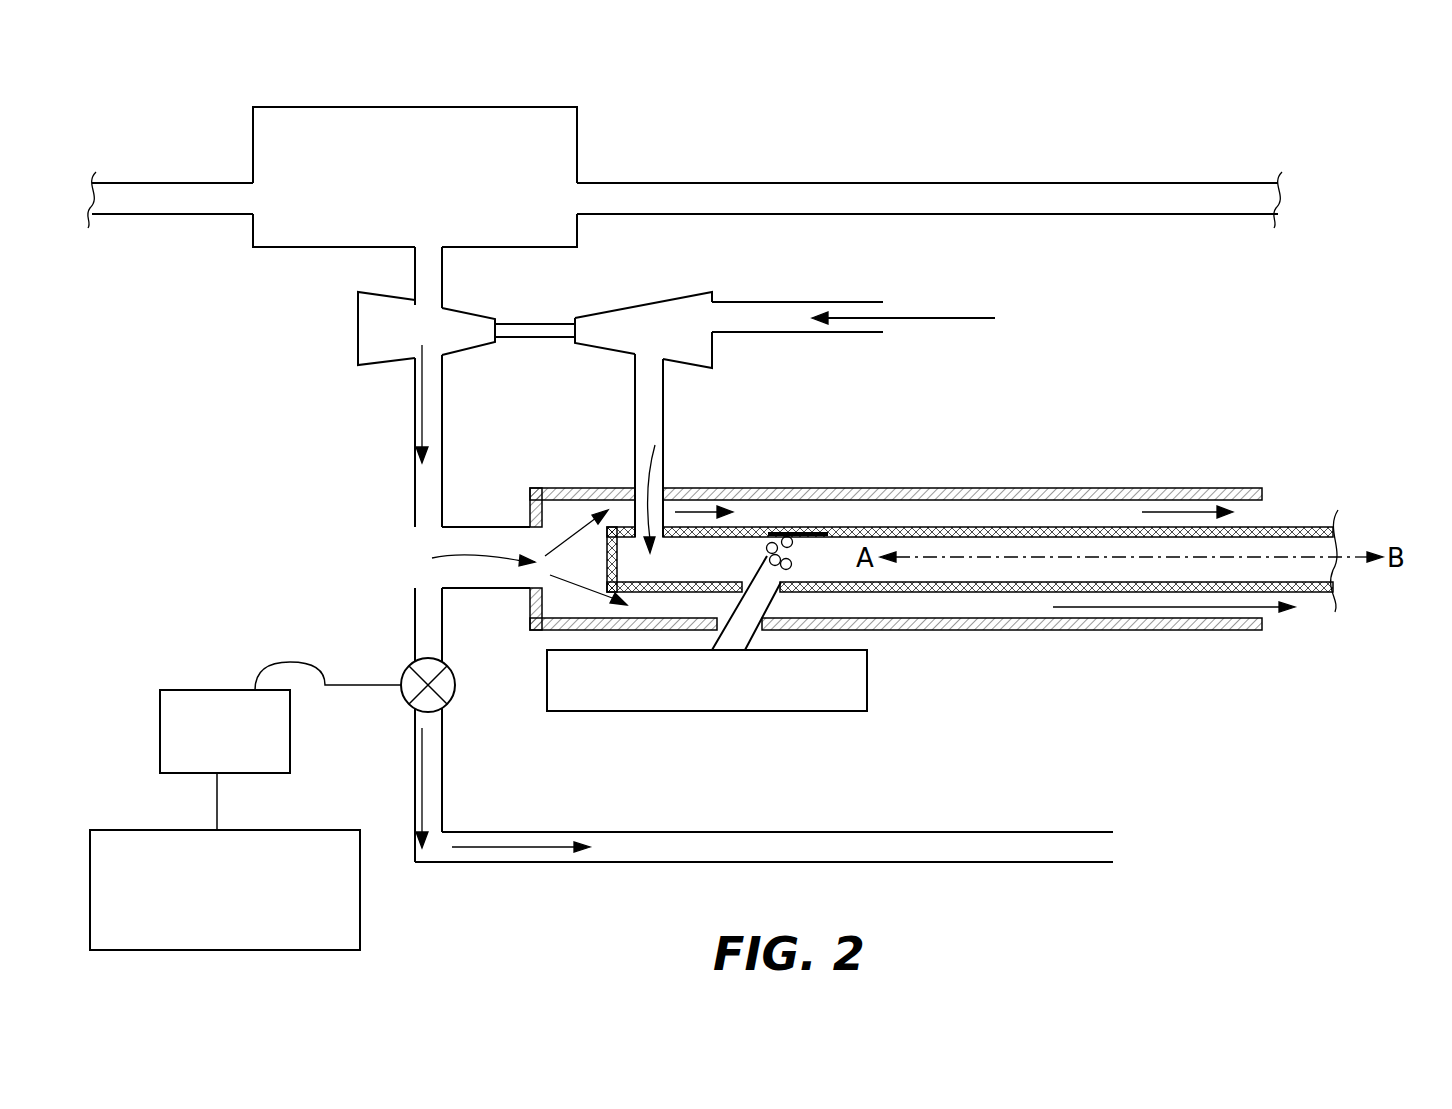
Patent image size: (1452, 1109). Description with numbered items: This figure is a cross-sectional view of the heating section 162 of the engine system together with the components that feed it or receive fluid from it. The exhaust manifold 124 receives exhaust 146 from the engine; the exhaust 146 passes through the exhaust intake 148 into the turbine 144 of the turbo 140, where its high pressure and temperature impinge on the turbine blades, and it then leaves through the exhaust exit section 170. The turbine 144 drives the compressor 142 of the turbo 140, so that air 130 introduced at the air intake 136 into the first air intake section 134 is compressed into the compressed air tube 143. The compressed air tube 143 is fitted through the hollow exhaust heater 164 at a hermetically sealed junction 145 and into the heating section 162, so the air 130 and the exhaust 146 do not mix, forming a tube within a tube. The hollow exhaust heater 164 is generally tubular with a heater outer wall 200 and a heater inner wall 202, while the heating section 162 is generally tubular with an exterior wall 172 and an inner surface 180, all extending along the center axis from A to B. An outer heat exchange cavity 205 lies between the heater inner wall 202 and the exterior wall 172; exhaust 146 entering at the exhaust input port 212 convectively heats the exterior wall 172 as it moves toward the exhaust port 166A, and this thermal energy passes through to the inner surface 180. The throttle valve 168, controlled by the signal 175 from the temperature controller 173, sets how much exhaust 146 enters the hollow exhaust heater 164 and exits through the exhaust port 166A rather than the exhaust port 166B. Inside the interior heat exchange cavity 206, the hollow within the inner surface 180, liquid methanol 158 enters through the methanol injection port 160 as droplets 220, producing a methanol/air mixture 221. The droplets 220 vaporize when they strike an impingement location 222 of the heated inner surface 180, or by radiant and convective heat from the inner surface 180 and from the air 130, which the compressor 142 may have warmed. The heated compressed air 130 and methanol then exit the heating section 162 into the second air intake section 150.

The exhaust manifold 124 is at (402, 226).
The air 130 is at (1050, 327).
The first air intake section 134 is at (757, 305).
The air intake 136 is at (888, 292).
The turbo 140 is at (545, 323).
The compressor 142 is at (657, 300).
The compressed air tube 143 is at (635, 410).
The turbine 144 is at (360, 298).
The hermetically sealed junction 145 is at (618, 476).
The exhaust 146 is at (343, 213).
The exhaust intake 148 is at (413, 262).
The second air intake section 150 is at (1330, 543).
The methanol 158 is at (795, 695).
The methanol injection port 160 is at (756, 543).
The heating section 162 is at (970, 571).
The hollow exhaust heater 164 is at (861, 524).
The exhaust port 166A is at (1273, 507).
The exhaust port 166B is at (1123, 846).
The throttle valve 168 is at (407, 665).
The exhaust exit section 170 is at (415, 412).
The exterior wall 172 is at (998, 525).
The temperature controller 173 is at (249, 937).
The signal 175 is at (249, 762).
The inner surface 180 is at (1033, 583).
The heater outer wall 200 is at (778, 488).
The heater inner wall 202 is at (893, 490).
The outer heat exchange cavity 205 is at (917, 500).
The interior heat exchange cavity 206 is at (958, 580).
The exhaust input port 212 is at (505, 546).
The droplets 220 is at (804, 561).
The methanol/air mixture 221 is at (1086, 571).
The impingement location 222 is at (818, 527).